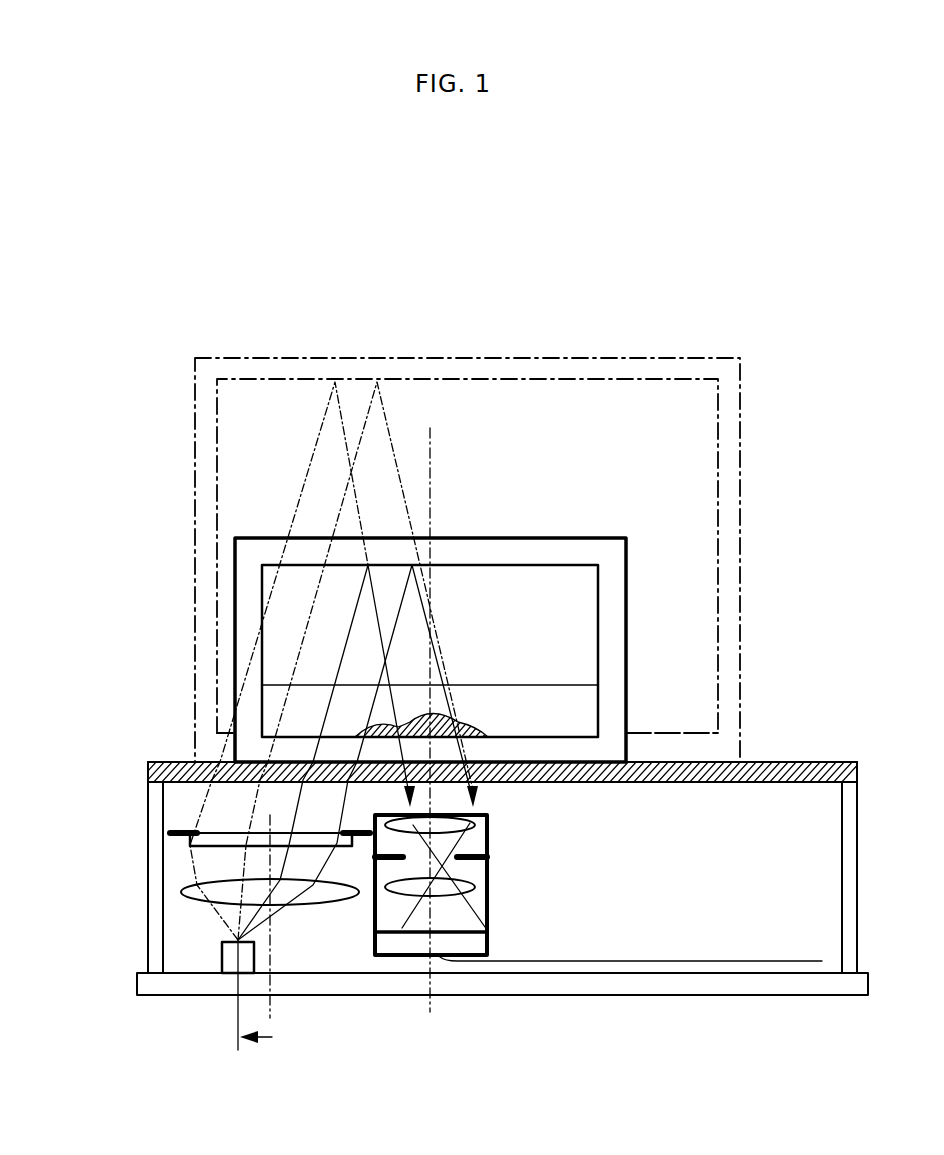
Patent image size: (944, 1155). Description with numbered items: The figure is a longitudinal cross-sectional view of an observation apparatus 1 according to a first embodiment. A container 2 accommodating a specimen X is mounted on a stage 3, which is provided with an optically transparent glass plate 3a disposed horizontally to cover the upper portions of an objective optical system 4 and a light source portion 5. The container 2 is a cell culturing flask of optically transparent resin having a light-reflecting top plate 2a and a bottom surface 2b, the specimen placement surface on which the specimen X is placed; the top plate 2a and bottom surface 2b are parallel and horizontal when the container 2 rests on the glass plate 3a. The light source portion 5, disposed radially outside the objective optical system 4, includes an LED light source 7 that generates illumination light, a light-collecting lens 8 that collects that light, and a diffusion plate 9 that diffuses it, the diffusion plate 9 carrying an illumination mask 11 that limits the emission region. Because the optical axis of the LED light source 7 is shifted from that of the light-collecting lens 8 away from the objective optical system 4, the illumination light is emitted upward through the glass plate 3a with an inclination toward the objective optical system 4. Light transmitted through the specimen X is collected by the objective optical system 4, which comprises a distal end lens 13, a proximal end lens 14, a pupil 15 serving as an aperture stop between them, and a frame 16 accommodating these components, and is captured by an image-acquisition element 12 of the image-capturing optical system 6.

The observation apparatus 1 is at (100, 200).
The container 2 is at (290, 346).
The top plate 2a is at (580, 382).
The bottom surface 2b is at (523, 735).
The stage 3 is at (133, 760).
The glass plate 3a is at (165, 762).
The objective optical system 4 is at (500, 914).
The light source portion 5 is at (98, 858).
The image-capturing optical system 6 is at (600, 833).
The LED light source 7 is at (222, 955).
The light-collecting lens 8 is at (187, 883).
The diffusion plate 9 is at (192, 843).
The illumination mask 11 is at (180, 832).
The image-acquisition element 12 is at (400, 948).
The distal end lens 13 is at (475, 818).
The proximal end lens 14 is at (477, 887).
The pupil 15 is at (475, 848).
The frame 16 is at (372, 922).
The specimen X is at (415, 722).